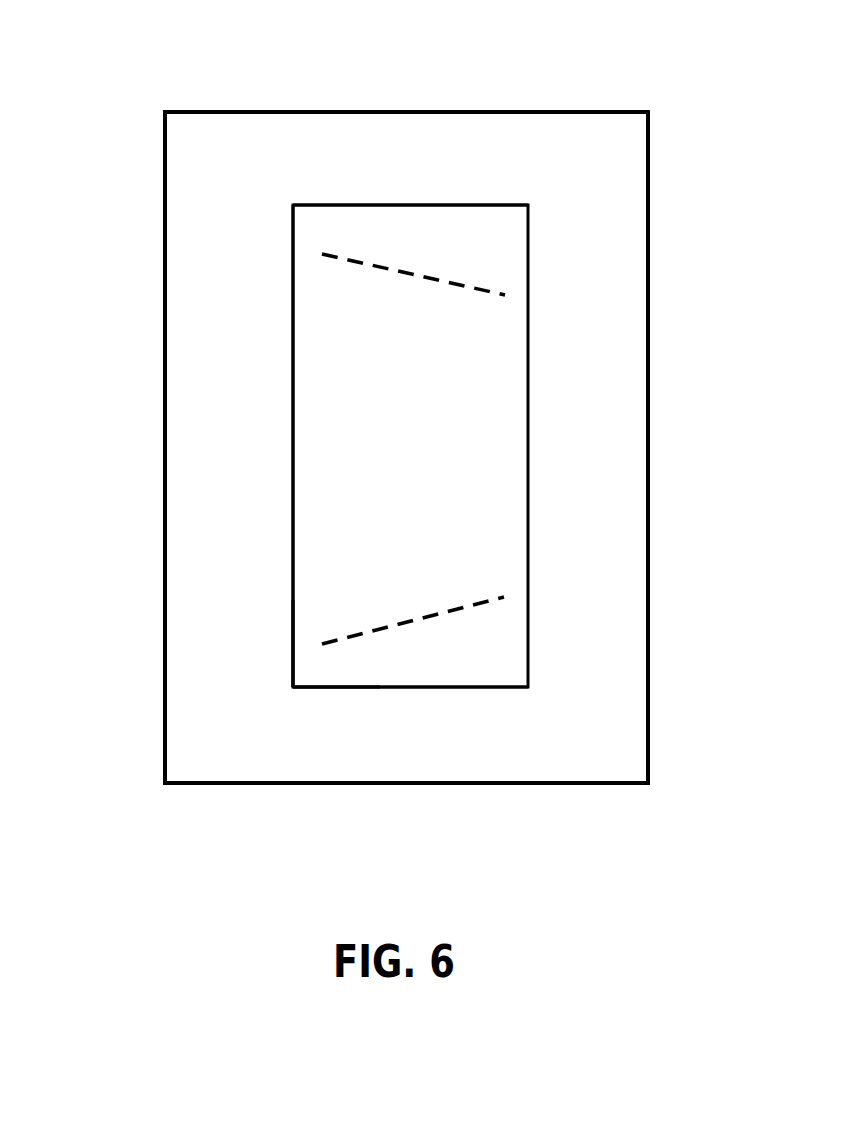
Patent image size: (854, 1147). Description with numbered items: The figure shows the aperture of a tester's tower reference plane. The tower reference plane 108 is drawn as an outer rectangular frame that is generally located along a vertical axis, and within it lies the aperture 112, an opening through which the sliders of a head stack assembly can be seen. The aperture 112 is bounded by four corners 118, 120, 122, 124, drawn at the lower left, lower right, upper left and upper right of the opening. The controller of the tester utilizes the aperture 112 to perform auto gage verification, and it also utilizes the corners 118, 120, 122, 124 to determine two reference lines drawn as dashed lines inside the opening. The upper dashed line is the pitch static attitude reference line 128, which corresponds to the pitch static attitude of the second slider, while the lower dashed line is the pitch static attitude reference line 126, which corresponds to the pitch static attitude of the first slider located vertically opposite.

The tower reference plane 108 is at (494, 112).
The aperture 112 is at (405, 458).
The corner 118 is at (293, 688).
The corner 120 is at (560, 687).
The corner 122 is at (293, 205).
The corner 124 is at (560, 205).
The pitch static attitude reference line 126 is at (428, 615).
The pitch static attitude reference line 128 is at (405, 273).